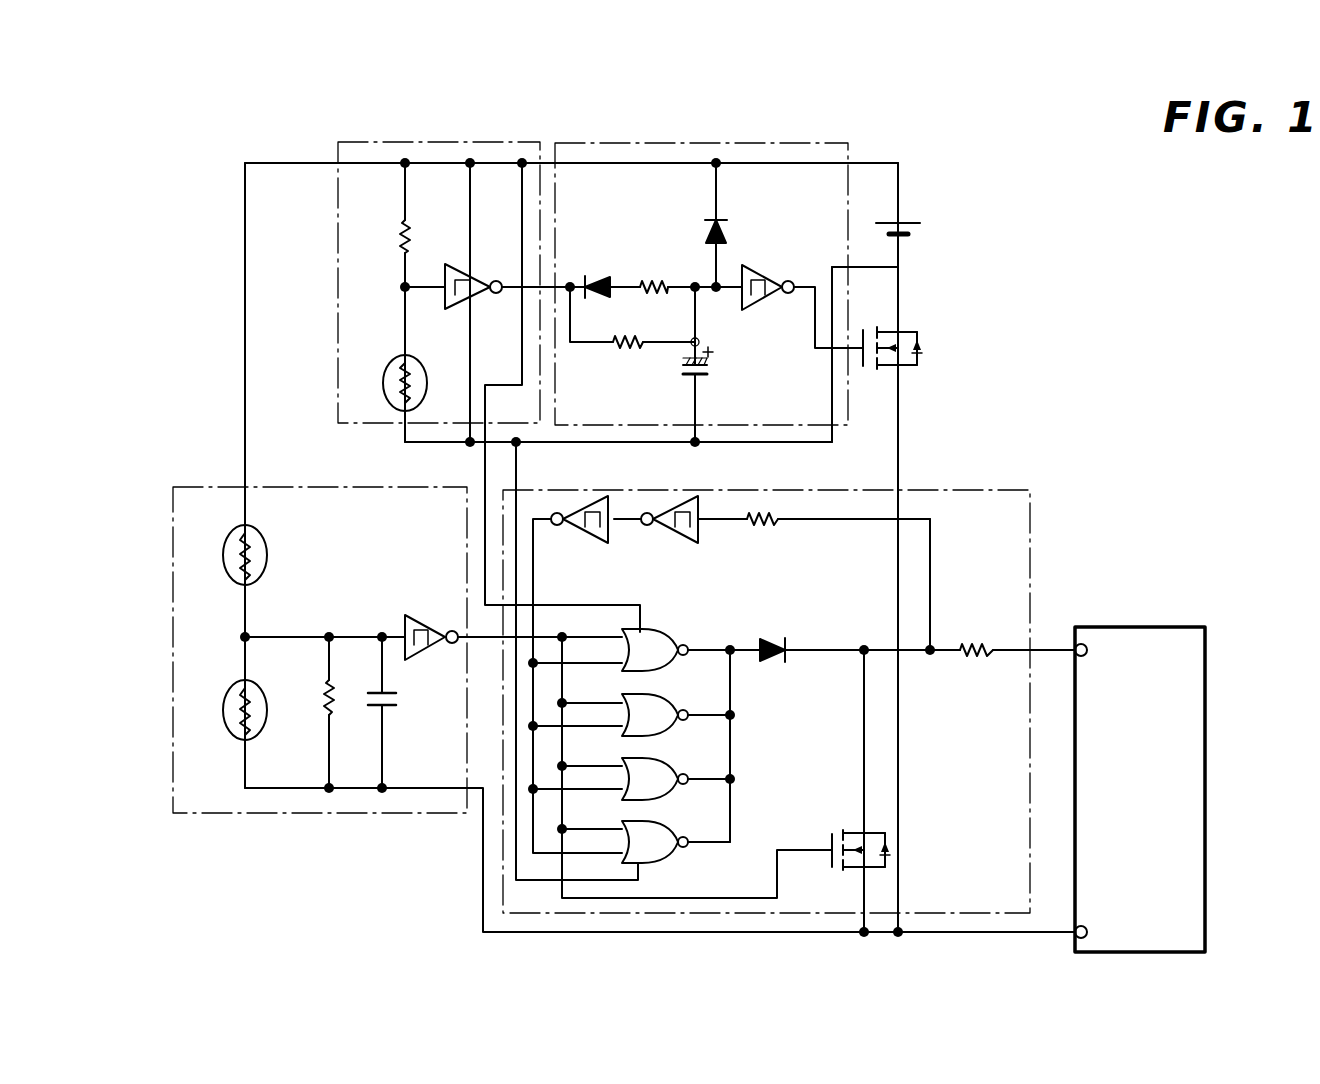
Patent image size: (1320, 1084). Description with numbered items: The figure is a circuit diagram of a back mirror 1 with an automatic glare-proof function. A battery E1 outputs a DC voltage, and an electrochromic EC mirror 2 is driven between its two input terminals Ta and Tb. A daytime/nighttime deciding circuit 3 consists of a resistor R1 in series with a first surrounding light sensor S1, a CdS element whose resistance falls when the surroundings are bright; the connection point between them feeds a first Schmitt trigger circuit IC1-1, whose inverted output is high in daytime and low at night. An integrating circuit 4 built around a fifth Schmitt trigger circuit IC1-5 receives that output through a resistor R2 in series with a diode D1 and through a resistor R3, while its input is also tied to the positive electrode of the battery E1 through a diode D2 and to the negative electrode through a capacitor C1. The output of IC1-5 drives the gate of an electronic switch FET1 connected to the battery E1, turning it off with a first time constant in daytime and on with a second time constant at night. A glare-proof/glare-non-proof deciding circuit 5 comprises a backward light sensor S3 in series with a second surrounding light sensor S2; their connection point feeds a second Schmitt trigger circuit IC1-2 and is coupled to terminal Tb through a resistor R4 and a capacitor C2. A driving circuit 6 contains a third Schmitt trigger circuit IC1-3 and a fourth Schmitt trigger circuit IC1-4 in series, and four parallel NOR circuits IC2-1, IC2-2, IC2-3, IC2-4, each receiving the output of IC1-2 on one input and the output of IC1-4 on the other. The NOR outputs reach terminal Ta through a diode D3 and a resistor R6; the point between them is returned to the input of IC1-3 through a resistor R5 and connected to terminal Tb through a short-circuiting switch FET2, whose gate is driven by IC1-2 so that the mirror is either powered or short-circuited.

The back mirror 1 is at (945, 185).
The EC mirror 2 is at (1206, 722).
The daytime/nighttime deciding circuit 3 is at (357, 140).
The integrating circuit 4 is at (822, 140).
The glare-proof/glare-non-proof deciding circuit 5 is at (318, 815).
The driving circuit 6 is at (985, 490).
The resistor R1 is at (386, 236).
The resistor R2 is at (654, 271).
The resistor R3 is at (627, 356).
The resistor R4 is at (308, 697).
The resistor R5 is at (762, 536).
The resistor R6 is at (976, 636).
The first surrounding light sensor S1 is at (389, 383).
The second surrounding light sensor S2 is at (225, 710).
The backward light sensor S3 is at (225, 555).
The first Schmitt trigger circuit IC1-1 is at (478, 275).
The second Schmitt trigger circuit IC1-2 is at (425, 625).
The third Schmitt trigger circuit IC1-3 is at (702, 512).
The fourth Schmitt trigger circuit IC1-4 is at (598, 502).
The fifth Schmitt trigger circuit IC1-5 is at (768, 280).
The NOR circuit IC2-1 is at (672, 635).
The NOR circuit IC2-2 is at (675, 690).
The NOR circuit IC2-3 is at (675, 757).
The NOR circuit IC2-4 is at (672, 858).
The diode D1 is at (599, 274).
The diode D2 is at (706, 220).
The diode D3 is at (792, 639).
The capacitor C1 is at (718, 365).
The capacitor C2 is at (400, 699).
The battery E1 is at (913, 232).
The electronic switch FET1 is at (925, 348).
The short-circuiting switch FET2 is at (840, 832).
The input terminal Ta is at (1085, 645).
The input terminal Tb is at (1076, 936).